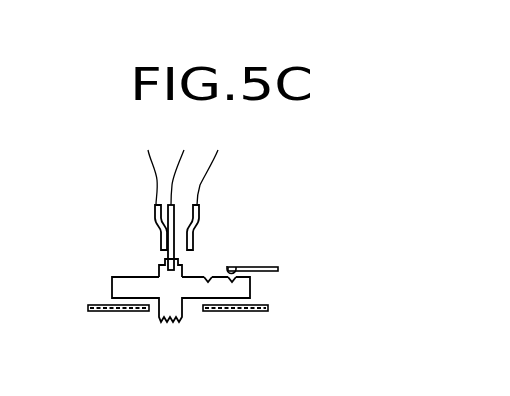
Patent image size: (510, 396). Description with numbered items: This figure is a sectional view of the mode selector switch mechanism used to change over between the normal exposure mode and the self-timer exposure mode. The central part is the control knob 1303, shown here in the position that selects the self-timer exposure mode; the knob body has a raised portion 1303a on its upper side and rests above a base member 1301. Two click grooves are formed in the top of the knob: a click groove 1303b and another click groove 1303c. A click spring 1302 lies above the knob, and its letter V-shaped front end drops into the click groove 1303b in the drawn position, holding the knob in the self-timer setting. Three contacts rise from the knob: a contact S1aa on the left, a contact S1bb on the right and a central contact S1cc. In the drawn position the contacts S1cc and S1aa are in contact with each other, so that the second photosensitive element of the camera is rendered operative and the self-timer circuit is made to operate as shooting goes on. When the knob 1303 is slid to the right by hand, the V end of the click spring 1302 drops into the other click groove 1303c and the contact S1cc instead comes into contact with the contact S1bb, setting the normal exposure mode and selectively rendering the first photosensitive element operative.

The substrate plate 1301 is at (237, 311).
The click spring 1302 is at (272, 267).
The control knob 1303 is at (175, 311).
The terminal block boss 1303a is at (162, 265).
The click groove 1303b is at (233, 281).
The click groove 1303c is at (209, 282).
The contact S1aa is at (157, 236).
The contact S1bb is at (203, 233).
The contact S1cc is at (178, 257).